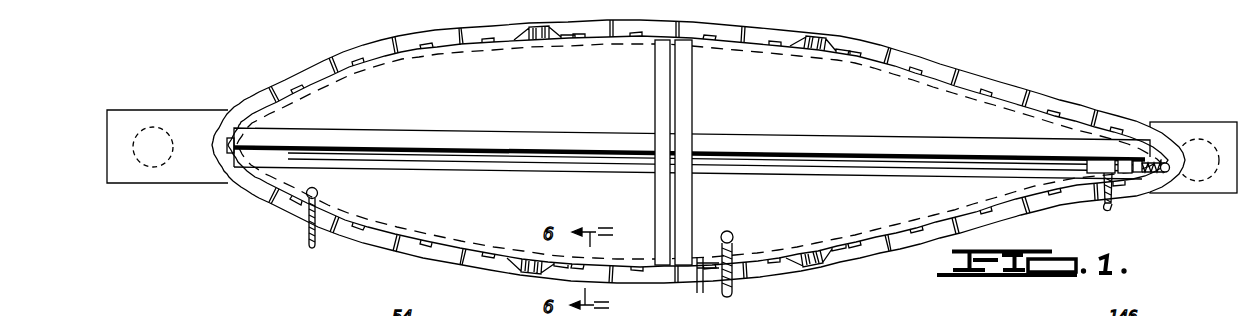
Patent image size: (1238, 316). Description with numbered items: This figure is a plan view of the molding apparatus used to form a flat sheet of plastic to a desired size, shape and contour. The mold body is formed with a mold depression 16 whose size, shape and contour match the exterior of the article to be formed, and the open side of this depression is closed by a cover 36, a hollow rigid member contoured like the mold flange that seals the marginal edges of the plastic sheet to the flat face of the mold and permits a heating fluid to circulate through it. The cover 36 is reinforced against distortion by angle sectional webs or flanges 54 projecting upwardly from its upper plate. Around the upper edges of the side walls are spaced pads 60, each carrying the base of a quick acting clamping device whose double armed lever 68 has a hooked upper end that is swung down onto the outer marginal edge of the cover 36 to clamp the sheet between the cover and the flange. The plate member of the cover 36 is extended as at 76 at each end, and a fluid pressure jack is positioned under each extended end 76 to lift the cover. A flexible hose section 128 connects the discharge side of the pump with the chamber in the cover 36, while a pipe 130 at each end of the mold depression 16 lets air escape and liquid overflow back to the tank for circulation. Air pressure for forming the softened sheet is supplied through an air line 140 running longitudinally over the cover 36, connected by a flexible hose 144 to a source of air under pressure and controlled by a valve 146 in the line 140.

The mold depression 16 is at (892, 87).
The cover 36 is at (850, 211).
The angle sectional webs or flanges 54 is at (678, 112).
The pads 60 is at (417, 254).
The double armed lever 68 is at (702, 287).
The extended end of plate member 76 is at (172, 177).
The flexible hose section 128 is at (733, 238).
The pipe 130 is at (312, 247).
The air line 140 is at (762, 160).
The flexible hose 144 is at (1165, 160).
The valve 146 is at (1113, 207).